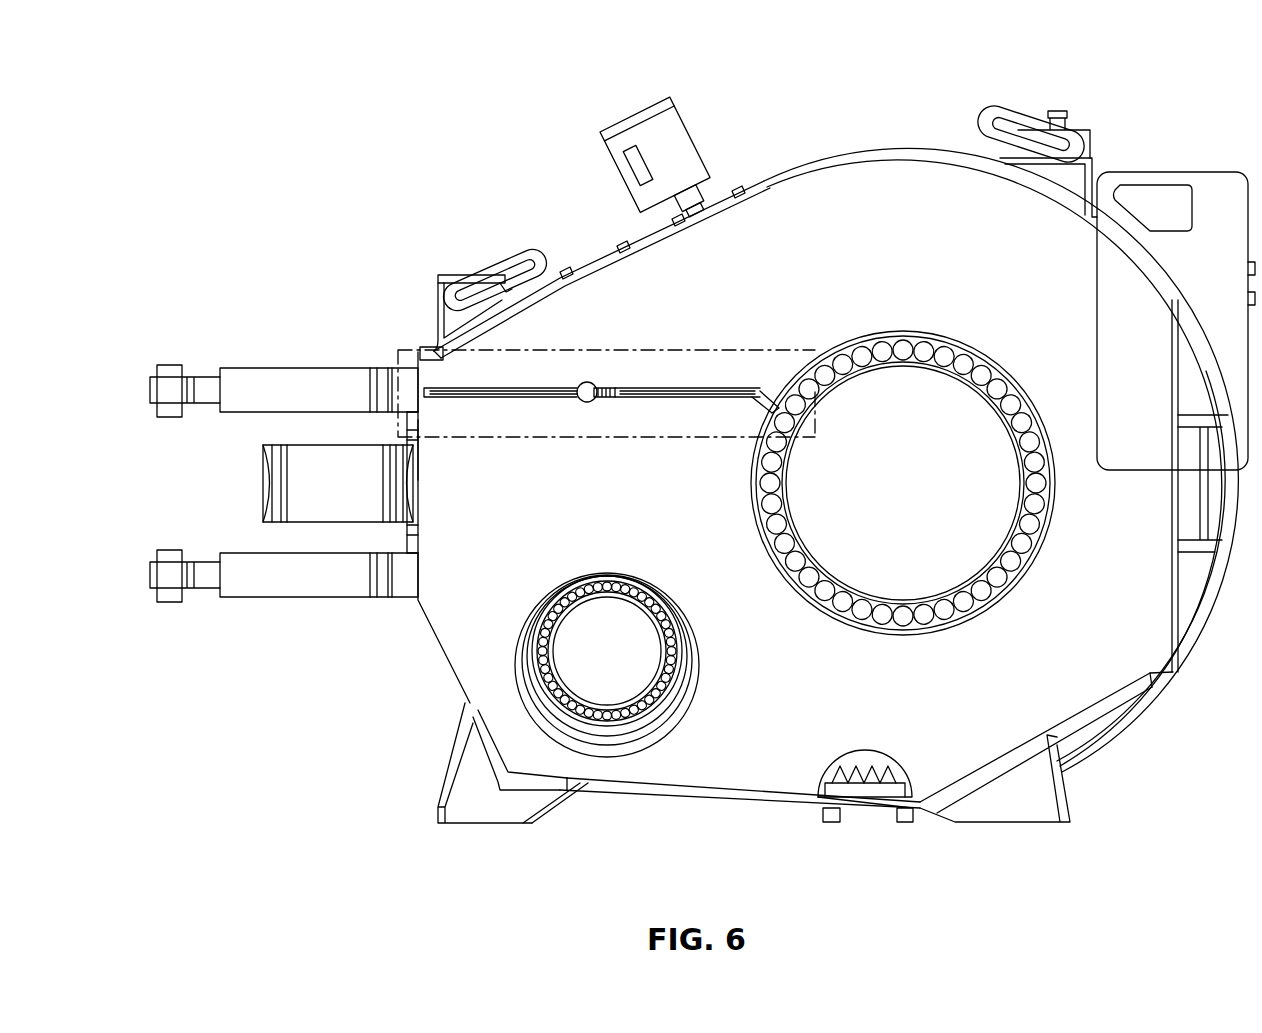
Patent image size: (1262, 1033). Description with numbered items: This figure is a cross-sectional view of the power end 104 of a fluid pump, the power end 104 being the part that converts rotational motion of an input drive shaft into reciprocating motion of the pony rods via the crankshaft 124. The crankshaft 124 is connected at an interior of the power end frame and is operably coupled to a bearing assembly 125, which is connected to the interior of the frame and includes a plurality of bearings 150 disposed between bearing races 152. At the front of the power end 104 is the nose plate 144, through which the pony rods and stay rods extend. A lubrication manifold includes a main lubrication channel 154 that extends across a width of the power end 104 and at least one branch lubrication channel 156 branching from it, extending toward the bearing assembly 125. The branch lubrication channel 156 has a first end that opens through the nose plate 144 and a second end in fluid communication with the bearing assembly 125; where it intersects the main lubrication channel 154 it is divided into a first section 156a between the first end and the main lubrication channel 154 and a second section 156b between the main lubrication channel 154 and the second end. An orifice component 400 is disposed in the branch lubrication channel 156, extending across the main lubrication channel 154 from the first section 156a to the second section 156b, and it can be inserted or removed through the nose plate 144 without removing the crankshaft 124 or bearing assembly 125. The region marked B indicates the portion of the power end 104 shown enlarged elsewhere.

The power end 104 is at (906, 105).
The bearing assembly 125 is at (939, 459).
The bearings 150 is at (868, 346).
The bearing races 152 is at (922, 335).
The crankshaft 124 is at (1010, 470).
The orifice component 400 is at (601, 392).
The main lubrication channel 154 is at (583, 398).
The branch lubrication channel 156 is at (601, 386).
The first section 156a is at (577, 383).
The second section 156b is at (774, 383).
The nose plate 144 is at (420, 448).
The detail region B is at (615, 350).